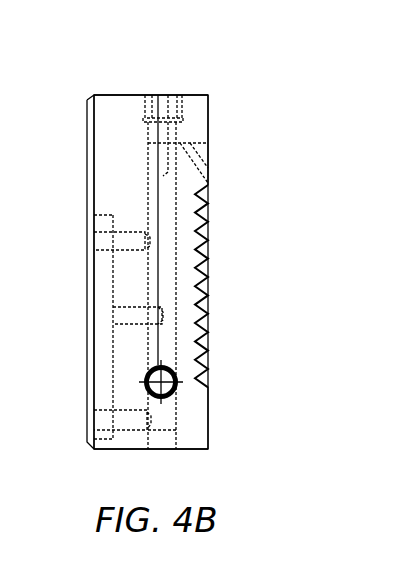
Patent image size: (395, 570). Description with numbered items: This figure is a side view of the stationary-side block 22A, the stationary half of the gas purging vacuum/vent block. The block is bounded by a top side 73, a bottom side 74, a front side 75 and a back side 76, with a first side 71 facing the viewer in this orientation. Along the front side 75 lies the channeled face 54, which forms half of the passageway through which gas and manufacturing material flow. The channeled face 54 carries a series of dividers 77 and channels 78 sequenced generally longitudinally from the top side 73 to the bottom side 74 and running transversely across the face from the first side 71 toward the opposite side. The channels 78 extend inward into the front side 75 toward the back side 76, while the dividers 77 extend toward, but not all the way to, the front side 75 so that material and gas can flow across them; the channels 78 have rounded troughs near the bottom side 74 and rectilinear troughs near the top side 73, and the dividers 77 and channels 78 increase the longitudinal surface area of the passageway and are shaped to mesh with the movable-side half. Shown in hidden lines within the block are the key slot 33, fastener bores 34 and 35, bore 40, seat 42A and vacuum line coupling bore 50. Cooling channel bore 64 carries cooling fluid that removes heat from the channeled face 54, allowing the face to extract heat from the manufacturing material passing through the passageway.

The stationary-side block 22A is at (107, 100).
The top side 73 is at (138, 95).
The vacuum line coupling bore 50 is at (158, 120).
The front side 75 is at (210, 105).
The seat 42A is at (198, 127).
The back side 76 is at (87, 115).
The first side 71 is at (97, 168).
The fastener bore 34 is at (97, 243).
The key slot 33 is at (97, 297).
The bore 40 is at (113, 318).
The fastener bore 35 is at (97, 420).
The channeled face 54 is at (232, 228).
The dividers 77 is at (208, 262).
The channels 78 is at (208, 290).
The cooling channel bore 64 is at (165, 415).
The bottom side 74 is at (194, 448).